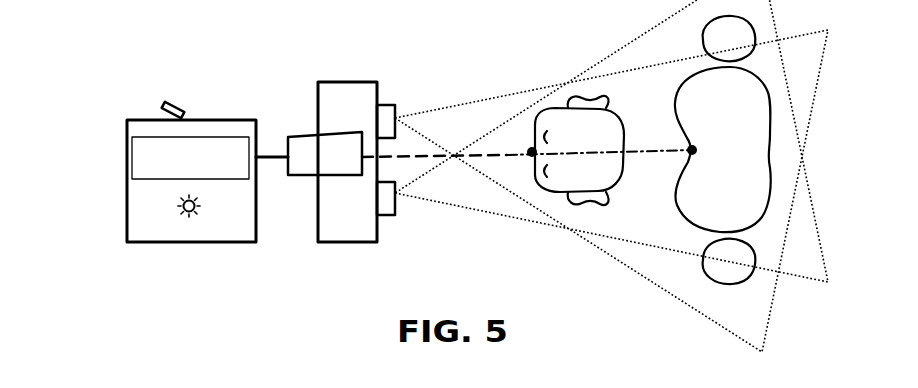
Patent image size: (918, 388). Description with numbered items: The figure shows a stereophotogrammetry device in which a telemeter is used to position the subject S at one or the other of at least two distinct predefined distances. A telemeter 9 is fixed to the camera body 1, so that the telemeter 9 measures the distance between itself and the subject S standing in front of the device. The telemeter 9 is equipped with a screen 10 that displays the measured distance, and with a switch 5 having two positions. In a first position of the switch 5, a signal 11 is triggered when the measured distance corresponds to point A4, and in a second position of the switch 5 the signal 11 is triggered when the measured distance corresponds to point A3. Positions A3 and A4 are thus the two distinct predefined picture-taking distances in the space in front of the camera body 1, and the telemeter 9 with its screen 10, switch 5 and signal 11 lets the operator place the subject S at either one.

The camera body 1 is at (360, 233).
The switch 5 is at (171, 104).
The telemeter 9 is at (297, 142).
The screen 10 is at (130, 125).
The signal 11 is at (177, 213).
The subject S is at (702, 105).
The position A3 is at (690, 152).
The position A4 is at (530, 151).